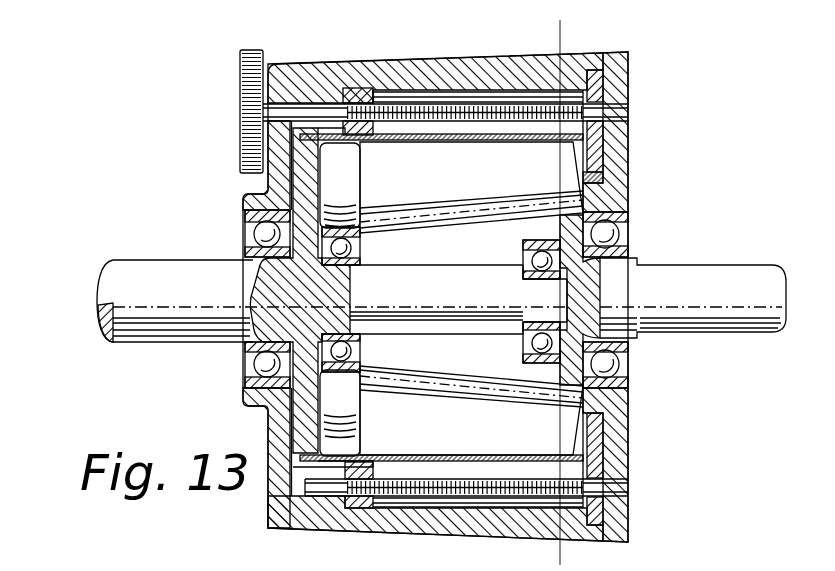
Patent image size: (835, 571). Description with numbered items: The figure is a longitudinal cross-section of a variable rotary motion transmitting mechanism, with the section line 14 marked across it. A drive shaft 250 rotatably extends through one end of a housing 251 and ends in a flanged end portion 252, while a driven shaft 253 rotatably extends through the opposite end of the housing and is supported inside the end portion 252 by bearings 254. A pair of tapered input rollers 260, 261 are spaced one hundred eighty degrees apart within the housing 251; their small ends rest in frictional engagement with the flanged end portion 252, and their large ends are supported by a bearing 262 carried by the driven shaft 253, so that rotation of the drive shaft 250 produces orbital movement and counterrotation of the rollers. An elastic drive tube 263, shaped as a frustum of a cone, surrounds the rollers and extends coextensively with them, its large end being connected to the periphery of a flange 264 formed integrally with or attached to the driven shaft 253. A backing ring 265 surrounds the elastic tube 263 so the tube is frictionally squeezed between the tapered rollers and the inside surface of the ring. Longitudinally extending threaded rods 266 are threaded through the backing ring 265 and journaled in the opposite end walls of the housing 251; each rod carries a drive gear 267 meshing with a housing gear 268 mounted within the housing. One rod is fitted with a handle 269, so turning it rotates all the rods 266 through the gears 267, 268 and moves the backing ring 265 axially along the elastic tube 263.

The section line 14- 14 is at (533, 33).
The drive shaft 250 is at (720, 247).
The housing 251 is at (421, 62).
The flanged end portion 252 is at (527, 229).
The driven shaft 253 is at (184, 272).
The bearings 254 is at (531, 344).
The tapered input roller 260 is at (451, 187).
The tapered input roller 261 is at (451, 411).
The bearing 262 is at (358, 247).
The elastic drive tube 263 is at (422, 463).
The flange 264 is at (302, 413).
The backing ring 265 is at (370, 88).
The threaded rods 266 is at (618, 112).
The drive gear 267 is at (600, 92).
The housing gear 268 is at (600, 175).
The handle 269 is at (249, 50).